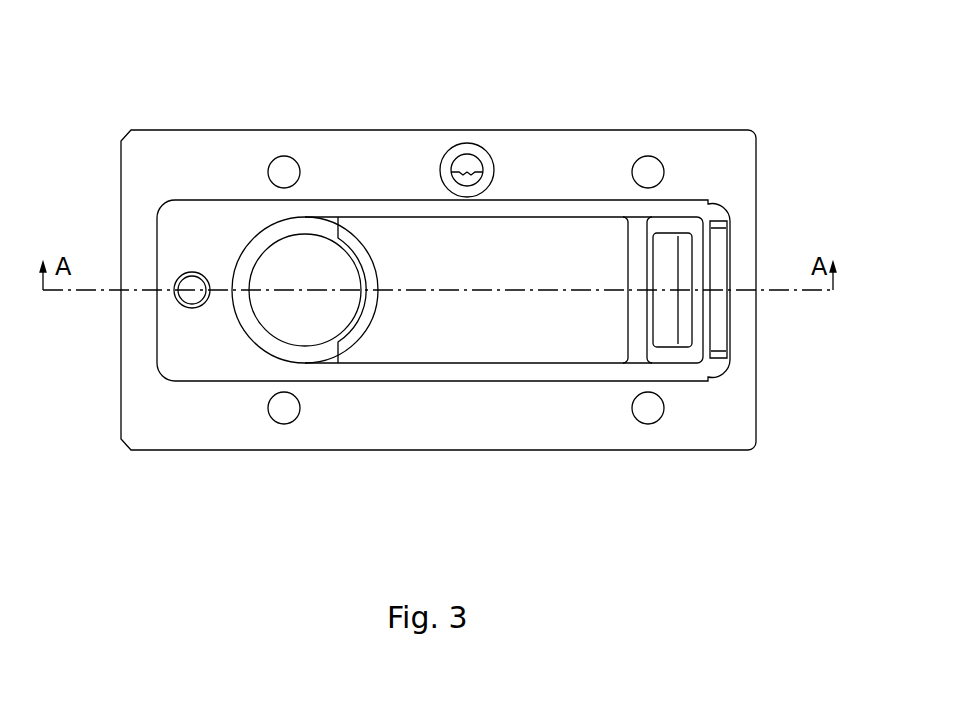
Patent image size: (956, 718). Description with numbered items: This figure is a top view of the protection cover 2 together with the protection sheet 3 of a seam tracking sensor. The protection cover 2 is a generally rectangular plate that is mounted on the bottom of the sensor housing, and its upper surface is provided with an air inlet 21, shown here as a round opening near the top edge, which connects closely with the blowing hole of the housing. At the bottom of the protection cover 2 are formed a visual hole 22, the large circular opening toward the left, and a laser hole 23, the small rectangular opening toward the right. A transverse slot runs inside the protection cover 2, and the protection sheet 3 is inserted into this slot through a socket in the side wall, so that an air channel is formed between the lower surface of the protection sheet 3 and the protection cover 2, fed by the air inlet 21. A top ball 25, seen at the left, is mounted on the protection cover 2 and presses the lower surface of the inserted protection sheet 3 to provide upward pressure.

The protection cover 2 is at (353, 417).
The protection sheet 3 is at (527, 340).
The air inlet 21 is at (470, 163).
The visual hole 22 is at (293, 267).
The laser hole 23 is at (670, 260).
The top ball 25 is at (182, 303).